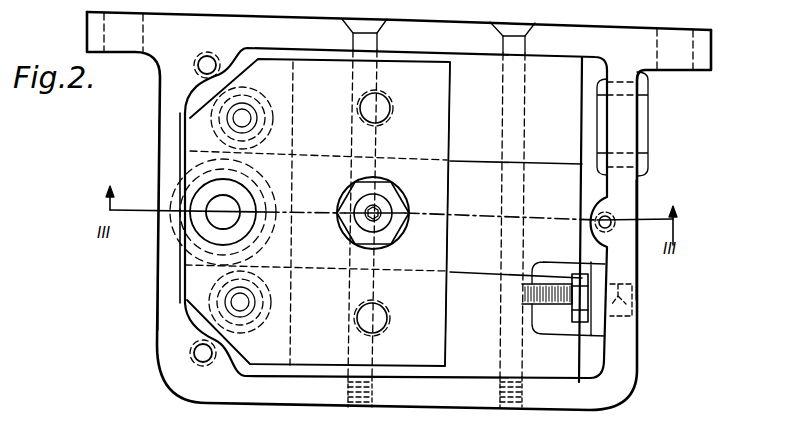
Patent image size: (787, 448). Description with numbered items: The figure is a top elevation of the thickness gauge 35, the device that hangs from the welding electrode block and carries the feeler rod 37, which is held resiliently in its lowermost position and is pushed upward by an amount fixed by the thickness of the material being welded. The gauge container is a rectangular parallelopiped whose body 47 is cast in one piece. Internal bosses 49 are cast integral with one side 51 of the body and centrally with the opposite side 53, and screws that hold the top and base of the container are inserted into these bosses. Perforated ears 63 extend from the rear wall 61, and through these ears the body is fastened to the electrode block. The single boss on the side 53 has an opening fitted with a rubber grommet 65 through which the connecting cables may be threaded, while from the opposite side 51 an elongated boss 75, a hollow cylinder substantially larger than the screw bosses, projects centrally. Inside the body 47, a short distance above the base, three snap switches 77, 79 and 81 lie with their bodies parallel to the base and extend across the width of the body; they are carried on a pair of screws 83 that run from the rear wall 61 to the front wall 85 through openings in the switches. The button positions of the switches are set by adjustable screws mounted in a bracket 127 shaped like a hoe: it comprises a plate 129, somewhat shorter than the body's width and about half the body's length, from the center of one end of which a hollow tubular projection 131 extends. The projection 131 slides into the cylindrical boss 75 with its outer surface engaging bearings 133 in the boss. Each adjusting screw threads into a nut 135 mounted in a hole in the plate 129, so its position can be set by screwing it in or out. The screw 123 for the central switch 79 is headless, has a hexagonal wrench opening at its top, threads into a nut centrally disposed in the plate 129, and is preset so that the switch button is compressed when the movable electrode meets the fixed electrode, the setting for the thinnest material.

The thickness gauge 35 is at (672, 299).
The feeler rod 37 is at (232, 203).
The body 47 is at (612, 402).
The internal bosses 49 is at (187, 335).
The side 51 is at (165, 236).
The opposite side 53 is at (620, 215).
The rear wall 61 is at (633, 36).
The perforated ears 63 is at (87, 27).
The rubber grommet 65 is at (646, 88).
The elongated boss 75 is at (185, 266).
The snap switch 77 is at (480, 368).
The snap switch 79 is at (545, 235).
The snap switch 81 is at (567, 120).
The screws 83 is at (508, 405).
The front wall 85 is at (547, 408).
The adjustable screw 123 is at (387, 205).
The bracket 127 is at (493, 357).
The plate 129 is at (323, 350).
The hollow tubular projection 131 is at (203, 188).
The bearings 133 is at (178, 196).
The nut 135 is at (363, 236).